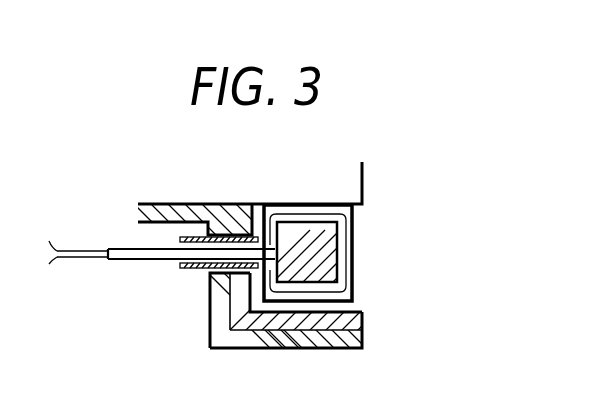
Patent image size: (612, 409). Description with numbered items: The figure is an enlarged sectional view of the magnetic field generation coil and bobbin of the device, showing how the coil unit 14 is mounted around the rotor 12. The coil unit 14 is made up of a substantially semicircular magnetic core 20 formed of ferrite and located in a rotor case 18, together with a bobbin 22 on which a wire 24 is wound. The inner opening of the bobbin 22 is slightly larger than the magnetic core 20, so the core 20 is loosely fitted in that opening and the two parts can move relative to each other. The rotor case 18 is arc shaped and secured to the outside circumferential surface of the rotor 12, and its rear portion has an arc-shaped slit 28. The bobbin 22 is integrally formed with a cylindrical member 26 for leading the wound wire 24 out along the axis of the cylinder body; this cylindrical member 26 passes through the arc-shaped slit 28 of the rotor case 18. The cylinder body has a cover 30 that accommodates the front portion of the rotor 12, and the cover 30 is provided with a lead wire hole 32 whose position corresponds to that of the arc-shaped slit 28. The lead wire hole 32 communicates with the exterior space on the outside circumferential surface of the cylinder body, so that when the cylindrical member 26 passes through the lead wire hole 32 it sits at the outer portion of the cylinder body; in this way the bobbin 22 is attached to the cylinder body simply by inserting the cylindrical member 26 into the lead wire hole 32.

The rotor 12 is at (345, 178).
The coil unit 14 is at (360, 234).
The rotor case 18 is at (352, 306).
The magnetic core 20 is at (334, 274).
The bobbin 22 is at (353, 253).
The wire 24 is at (84, 249).
The cylindrical member 26 is at (180, 267).
The arc-shaped slit 28 is at (210, 312).
The cover 30 is at (300, 350).
The lead wire hole 32 is at (208, 276).